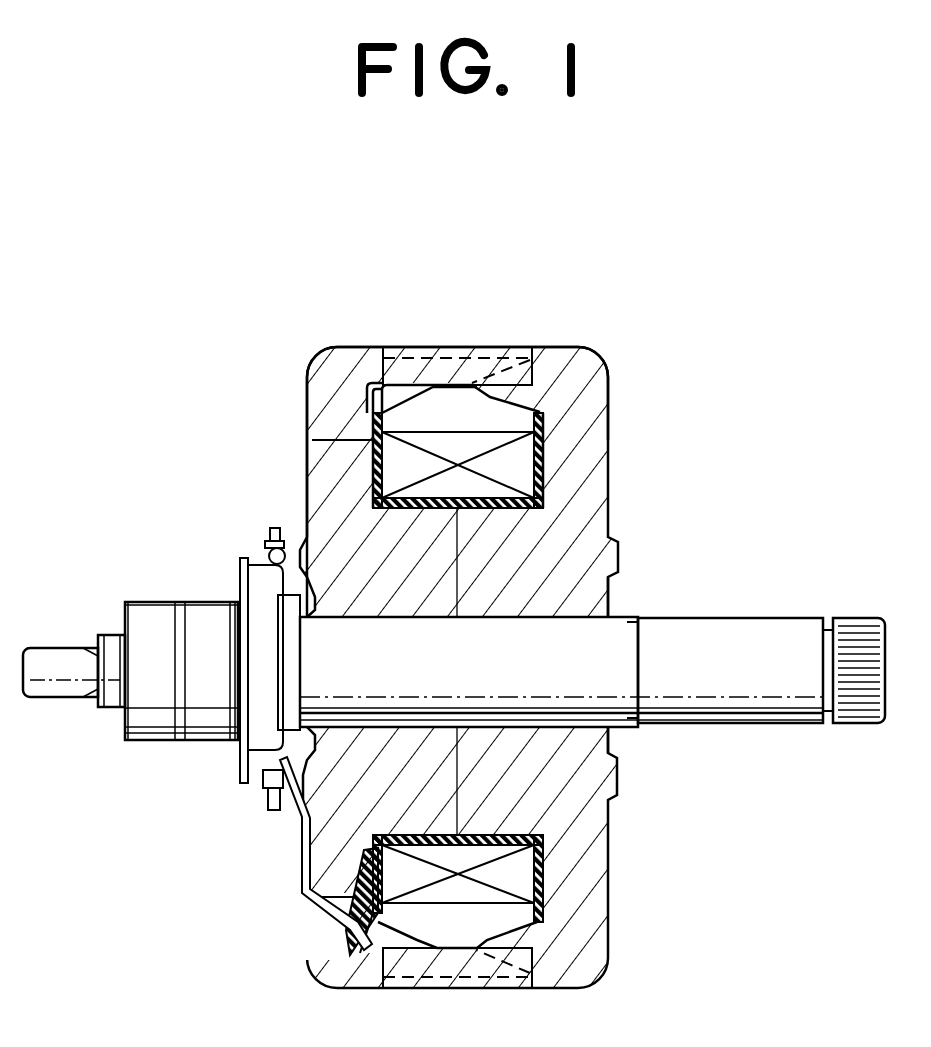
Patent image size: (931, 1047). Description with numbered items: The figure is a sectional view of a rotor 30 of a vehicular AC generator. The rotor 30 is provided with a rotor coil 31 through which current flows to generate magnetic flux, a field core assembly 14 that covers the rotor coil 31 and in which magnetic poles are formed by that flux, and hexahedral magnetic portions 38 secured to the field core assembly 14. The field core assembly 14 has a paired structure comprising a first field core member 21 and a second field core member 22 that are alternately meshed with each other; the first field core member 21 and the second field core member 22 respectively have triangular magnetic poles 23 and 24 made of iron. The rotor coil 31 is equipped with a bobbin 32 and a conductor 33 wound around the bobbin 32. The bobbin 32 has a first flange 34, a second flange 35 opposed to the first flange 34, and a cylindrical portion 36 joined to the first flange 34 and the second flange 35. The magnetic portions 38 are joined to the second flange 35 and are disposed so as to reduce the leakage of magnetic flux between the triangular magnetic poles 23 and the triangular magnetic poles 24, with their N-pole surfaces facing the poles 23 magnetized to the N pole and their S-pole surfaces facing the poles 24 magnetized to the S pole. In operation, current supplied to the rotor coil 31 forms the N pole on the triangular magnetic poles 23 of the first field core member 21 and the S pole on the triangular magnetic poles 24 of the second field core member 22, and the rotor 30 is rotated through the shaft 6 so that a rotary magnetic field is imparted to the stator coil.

The shaft 6 is at (610, 700).
The field core assembly 14 is at (600, 527).
The first field core member 21 is at (553, 581).
The second field core member 22 is at (333, 460).
The triangular magnetic poles 23 is at (470, 365).
The triangular magnetic poles 24 is at (357, 348).
The rotor 30 is at (615, 360).
The rotor coil 31 is at (527, 455).
The bobbin 32 is at (521, 467).
The conductor 33 is at (373, 440).
The first flange 34 is at (520, 492).
The second flange 35 is at (370, 493).
The cylindrical portion 36 is at (478, 830).
The magnetic portions 38 is at (407, 380).